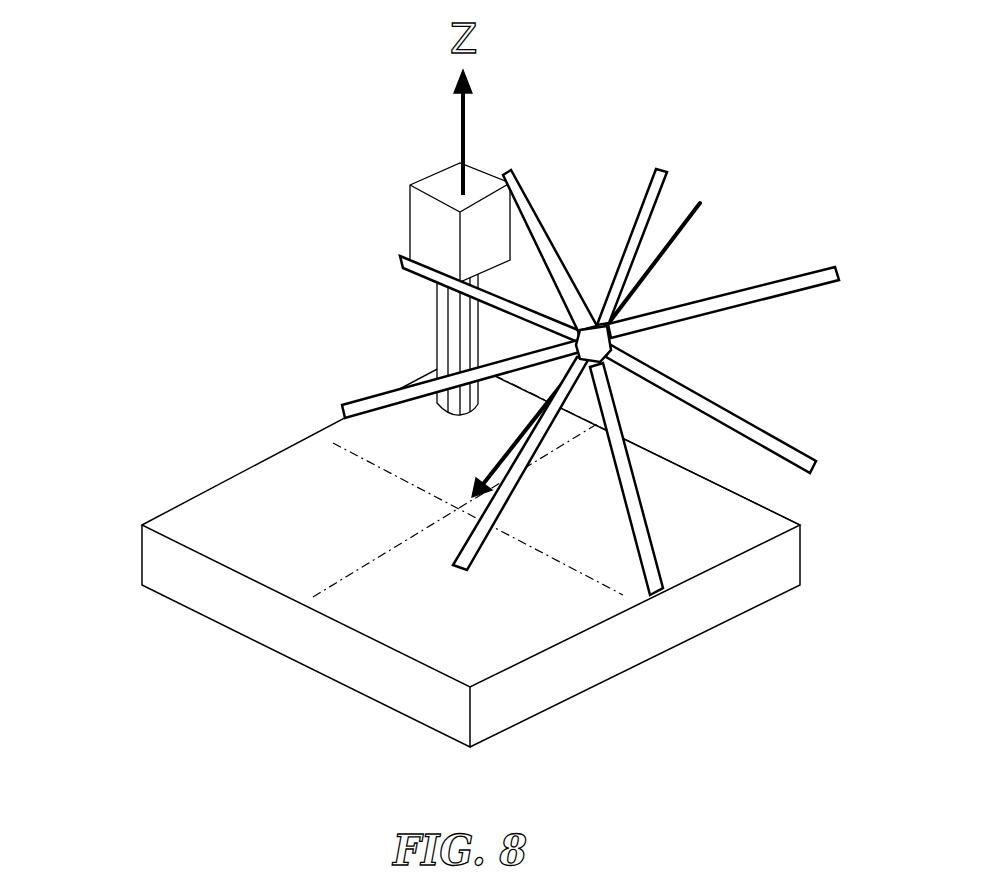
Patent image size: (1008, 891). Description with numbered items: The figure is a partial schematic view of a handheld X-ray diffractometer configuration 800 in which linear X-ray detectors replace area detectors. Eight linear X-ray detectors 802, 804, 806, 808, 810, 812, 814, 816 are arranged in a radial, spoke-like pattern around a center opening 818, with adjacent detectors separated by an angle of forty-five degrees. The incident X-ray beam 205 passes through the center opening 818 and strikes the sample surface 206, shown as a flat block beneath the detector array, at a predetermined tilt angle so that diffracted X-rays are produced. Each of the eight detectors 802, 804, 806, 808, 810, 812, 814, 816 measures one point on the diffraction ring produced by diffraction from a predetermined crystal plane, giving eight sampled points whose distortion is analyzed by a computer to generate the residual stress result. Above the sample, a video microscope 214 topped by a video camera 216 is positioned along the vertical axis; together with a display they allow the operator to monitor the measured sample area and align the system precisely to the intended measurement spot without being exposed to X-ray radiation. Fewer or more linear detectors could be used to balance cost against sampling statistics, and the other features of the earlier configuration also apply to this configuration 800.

The configuration 800 is at (208, 310).
The sample surface 206 is at (227, 503).
The video microscope 214 is at (447, 326).
The video camera 216 is at (430, 238).
The incident beam 205 is at (682, 228).
The linear X-ray detector 802 is at (653, 177).
The linear X-ray detector 804 is at (767, 290).
The linear X-ray detector 806 is at (785, 450).
The linear X-ray detector 808 is at (637, 522).
The linear X-ray detector 810 is at (495, 525).
The linear X-ray detector 812 is at (338, 405).
The linear X-ray detector 814 is at (445, 273).
The linear X-ray detector 816 is at (553, 255).
The center opening 818 is at (612, 348).